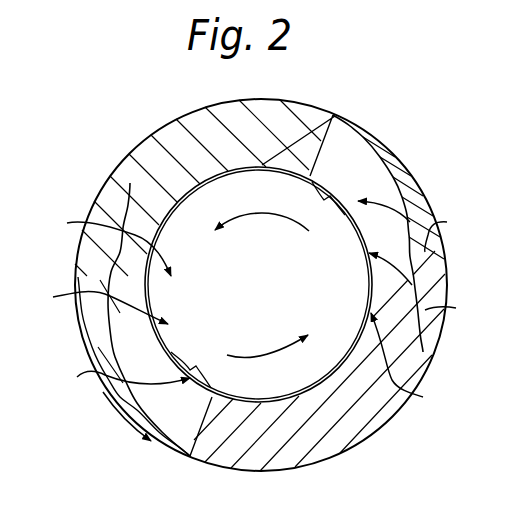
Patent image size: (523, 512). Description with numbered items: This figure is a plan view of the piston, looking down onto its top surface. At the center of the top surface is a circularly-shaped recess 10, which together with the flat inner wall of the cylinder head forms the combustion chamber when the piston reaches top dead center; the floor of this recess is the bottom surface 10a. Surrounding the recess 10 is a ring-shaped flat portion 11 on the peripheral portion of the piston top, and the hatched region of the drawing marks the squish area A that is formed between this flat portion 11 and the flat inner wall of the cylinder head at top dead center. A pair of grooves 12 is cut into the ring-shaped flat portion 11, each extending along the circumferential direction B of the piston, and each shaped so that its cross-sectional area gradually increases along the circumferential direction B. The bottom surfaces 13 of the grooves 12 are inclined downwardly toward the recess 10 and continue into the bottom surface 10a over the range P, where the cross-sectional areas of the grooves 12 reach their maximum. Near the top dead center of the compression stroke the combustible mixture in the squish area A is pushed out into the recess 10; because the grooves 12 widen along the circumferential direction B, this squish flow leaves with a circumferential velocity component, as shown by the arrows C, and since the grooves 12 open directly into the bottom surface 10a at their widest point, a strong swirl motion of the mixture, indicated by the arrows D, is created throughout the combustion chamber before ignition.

The circularly-shaped recess 10 is at (279, 174).
The bottom surface of the recess 10a is at (229, 290).
The ring-shaped flat portion 11 is at (236, 141).
The grooves 12 is at (367, 184).
The bottom surfaces of the grooves 13 is at (350, 174).
The squish area A is at (144, 185).
The circumferential direction B is at (116, 410).
The arrow indicating squish flow C is at (255, 307).
The arrow indicating swirl motion D is at (278, 216).
The range of maximum groove cross-sectional area P is at (258, 285).